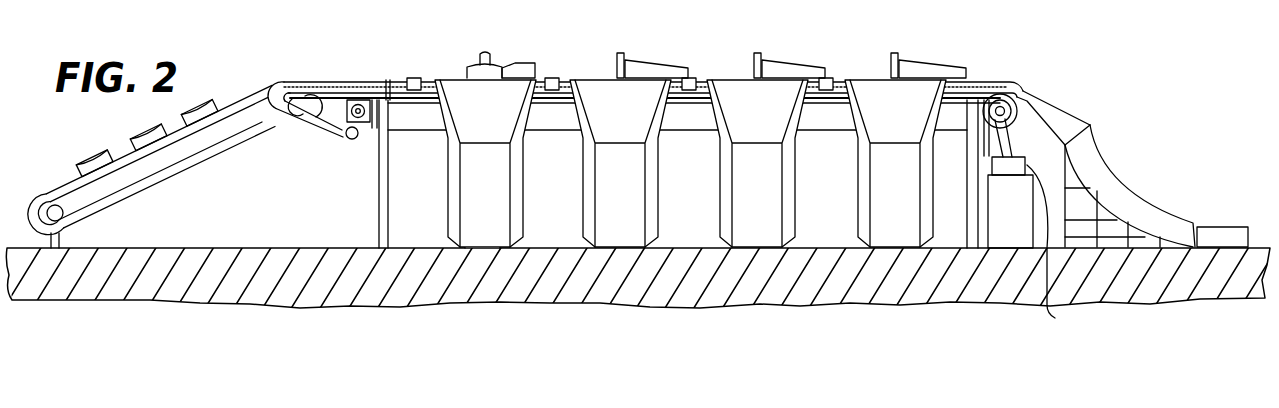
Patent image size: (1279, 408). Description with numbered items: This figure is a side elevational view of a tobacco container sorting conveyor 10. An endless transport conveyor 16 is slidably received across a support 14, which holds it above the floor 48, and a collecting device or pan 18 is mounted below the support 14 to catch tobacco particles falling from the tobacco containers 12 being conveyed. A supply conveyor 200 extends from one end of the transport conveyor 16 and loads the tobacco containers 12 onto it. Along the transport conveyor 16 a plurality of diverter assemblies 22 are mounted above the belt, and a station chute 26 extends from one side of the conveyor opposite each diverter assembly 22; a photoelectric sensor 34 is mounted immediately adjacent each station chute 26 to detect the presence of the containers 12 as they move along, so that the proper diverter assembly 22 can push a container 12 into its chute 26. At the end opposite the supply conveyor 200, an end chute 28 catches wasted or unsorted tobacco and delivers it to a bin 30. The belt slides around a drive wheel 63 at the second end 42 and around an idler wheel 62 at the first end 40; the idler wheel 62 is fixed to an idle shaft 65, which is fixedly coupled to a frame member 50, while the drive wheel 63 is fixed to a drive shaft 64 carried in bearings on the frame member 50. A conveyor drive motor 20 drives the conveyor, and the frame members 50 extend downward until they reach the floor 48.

The tobacco container sorting conveyor 10 is at (1050, 75).
The tobacco containers 12 is at (95, 156).
The support 14 is at (388, 82).
The endless transport conveyor 16 is at (337, 80).
The collecting device or pan 18 is at (830, 134).
The conveyor drive motor 20 is at (1053, 251).
The diverter assemblies 22 is at (503, 60).
The station chutes 26 is at (448, 166).
The end chute 28 is at (1143, 192).
The bin 30 is at (1227, 227).
The photoelectric sensor 34 is at (411, 77).
The first end 40 is at (295, 66).
The second end 42 is at (1007, 57).
The floor 48 is at (68, 302).
The frame member 50 is at (377, 195).
The idler wheel 62 is at (318, 128).
The drive wheel 63 is at (1030, 108).
The drive shaft 64 is at (1016, 127).
The idle shaft 65 is at (349, 139).
The supply conveyor 200 is at (55, 187).